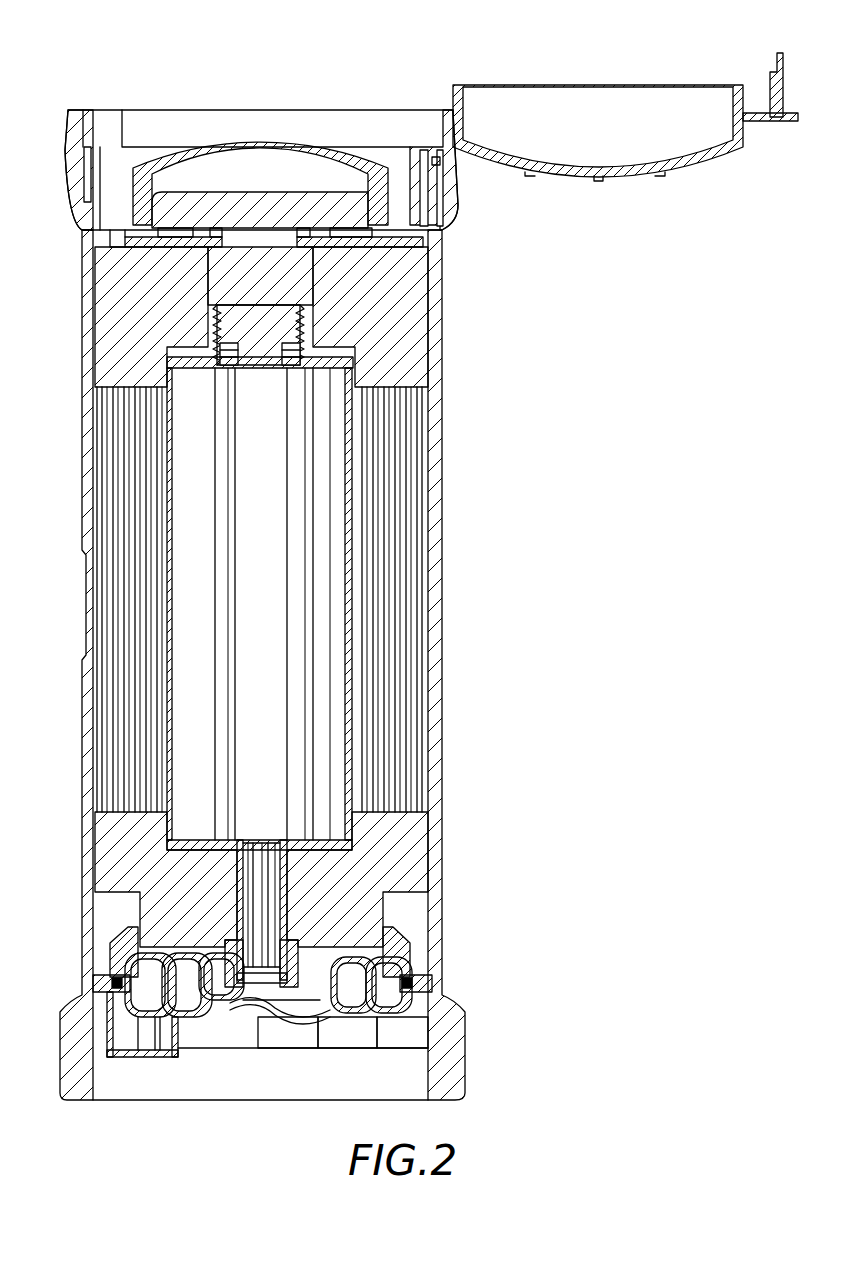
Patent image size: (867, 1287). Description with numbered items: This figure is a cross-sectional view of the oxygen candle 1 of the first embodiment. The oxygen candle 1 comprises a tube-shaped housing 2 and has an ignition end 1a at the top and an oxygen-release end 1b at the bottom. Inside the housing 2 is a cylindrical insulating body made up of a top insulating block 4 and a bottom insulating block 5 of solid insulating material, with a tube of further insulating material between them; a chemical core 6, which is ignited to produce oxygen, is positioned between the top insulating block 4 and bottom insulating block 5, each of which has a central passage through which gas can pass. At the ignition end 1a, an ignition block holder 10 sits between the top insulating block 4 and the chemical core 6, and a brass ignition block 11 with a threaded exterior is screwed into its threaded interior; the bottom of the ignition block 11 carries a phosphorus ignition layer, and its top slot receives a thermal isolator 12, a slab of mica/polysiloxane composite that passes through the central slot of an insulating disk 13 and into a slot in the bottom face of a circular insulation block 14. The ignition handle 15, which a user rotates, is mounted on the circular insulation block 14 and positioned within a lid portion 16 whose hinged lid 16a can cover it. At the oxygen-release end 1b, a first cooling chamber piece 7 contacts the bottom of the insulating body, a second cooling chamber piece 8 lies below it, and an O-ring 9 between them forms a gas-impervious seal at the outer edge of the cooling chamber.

The oxygen candle 1 is at (291, 52).
The ignition end 1a is at (167, 103).
The oxygen-release end 1b is at (153, 1106).
The housing 2 is at (85, 598).
The top insulating block 4 is at (420, 317).
The bottom insulating block 5 is at (420, 848).
The chemical core 6 is at (270, 518).
The first cooling chamber piece 7 is at (122, 952).
The second cooling chamber piece 8 is at (125, 1030).
The O-ring 9 is at (420, 990).
The ignition block holder 10 is at (347, 363).
The ignition block 11 is at (250, 332).
The thermal isolator 12 is at (232, 280).
The insulating disk 13 is at (400, 237).
The circular insulation block 14 is at (173, 212).
The ignition handle 15 is at (135, 168).
The lid portion 16 is at (405, 160).
The hinged lid 16a is at (672, 98).